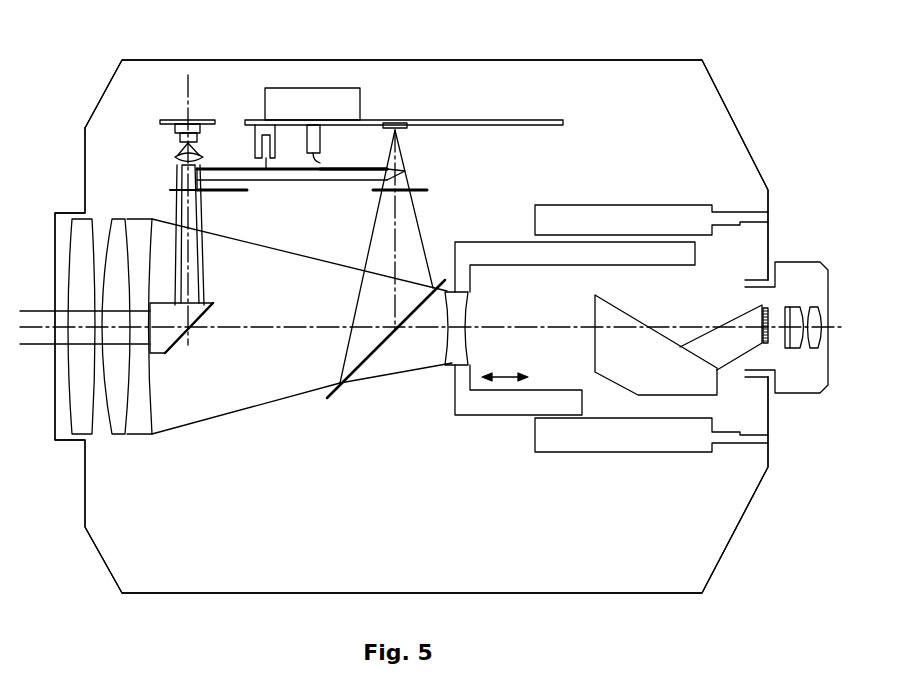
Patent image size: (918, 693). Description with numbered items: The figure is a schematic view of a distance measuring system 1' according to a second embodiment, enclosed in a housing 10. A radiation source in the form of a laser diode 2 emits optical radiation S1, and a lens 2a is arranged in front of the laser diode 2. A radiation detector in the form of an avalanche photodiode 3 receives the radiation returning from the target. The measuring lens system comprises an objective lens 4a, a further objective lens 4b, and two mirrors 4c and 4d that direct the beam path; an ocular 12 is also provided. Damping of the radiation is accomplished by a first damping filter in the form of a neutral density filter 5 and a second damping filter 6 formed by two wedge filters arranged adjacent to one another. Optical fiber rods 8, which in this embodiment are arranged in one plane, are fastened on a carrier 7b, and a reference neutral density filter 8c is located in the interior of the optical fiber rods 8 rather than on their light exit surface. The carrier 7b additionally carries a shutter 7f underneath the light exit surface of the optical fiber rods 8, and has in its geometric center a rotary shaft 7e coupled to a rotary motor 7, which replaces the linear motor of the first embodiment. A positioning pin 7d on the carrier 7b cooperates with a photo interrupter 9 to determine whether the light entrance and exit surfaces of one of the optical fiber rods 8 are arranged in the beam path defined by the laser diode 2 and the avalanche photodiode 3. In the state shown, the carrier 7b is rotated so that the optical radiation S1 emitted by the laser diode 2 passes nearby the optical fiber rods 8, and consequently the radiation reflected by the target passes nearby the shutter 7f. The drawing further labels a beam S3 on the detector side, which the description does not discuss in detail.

The distance measuring system 1' is at (428, 326).
The housing 10 is at (738, 530).
The laser diode 2 is at (195, 120).
The lens 2a is at (175, 158).
The neutral density filter 5 is at (172, 190).
The optical radiation S1 is at (203, 215).
The avalanche photodiode 3 is at (396, 125).
The third light beam S3 is at (292, 182).
The objective lens 4a is at (70, 250).
The objective lens 4b is at (140, 437).
The mirror 4c is at (185, 335).
The mirror 4d is at (366, 362).
The second damping filter 6 is at (427, 191).
The rotary motor 7 is at (308, 88).
The carrier 7b is at (337, 165).
The positioning pin 7d is at (268, 168).
The rotary shaft 7e is at (313, 160).
The shutter 7f is at (433, 190).
The holder 8 is at (357, 192).
The reference neutral density filter 8c is at (231, 168).
The photo interrupter 9 is at (280, 133).
The ocular 12 is at (815, 315).